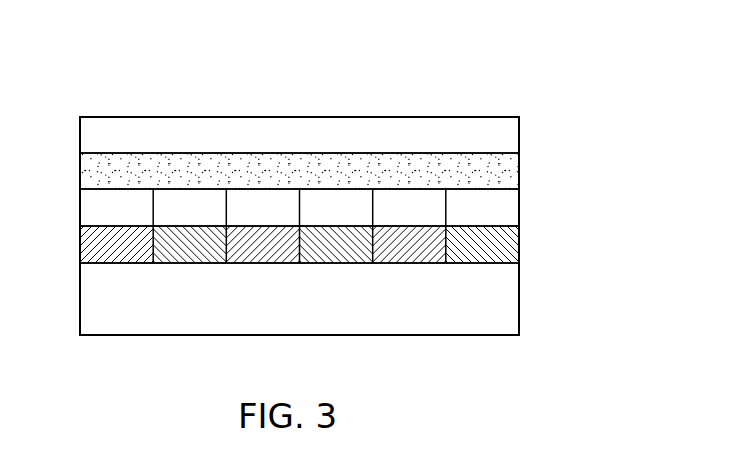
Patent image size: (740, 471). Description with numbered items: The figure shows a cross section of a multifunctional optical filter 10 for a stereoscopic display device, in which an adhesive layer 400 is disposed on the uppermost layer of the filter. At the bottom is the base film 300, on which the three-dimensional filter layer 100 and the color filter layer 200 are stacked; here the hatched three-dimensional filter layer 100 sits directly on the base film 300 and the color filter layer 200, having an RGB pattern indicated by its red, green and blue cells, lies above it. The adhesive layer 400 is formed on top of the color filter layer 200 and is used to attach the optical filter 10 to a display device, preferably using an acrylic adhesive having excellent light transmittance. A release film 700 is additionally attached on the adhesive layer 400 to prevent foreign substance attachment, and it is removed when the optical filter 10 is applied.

The optical filter 10 is at (436, 98).
The release film 700 is at (513, 132).
The adhesive layer 400 is at (513, 177).
The color filter layer 200 is at (513, 211).
The 3D filter layer 100 is at (513, 252).
The base film 300 is at (513, 303).